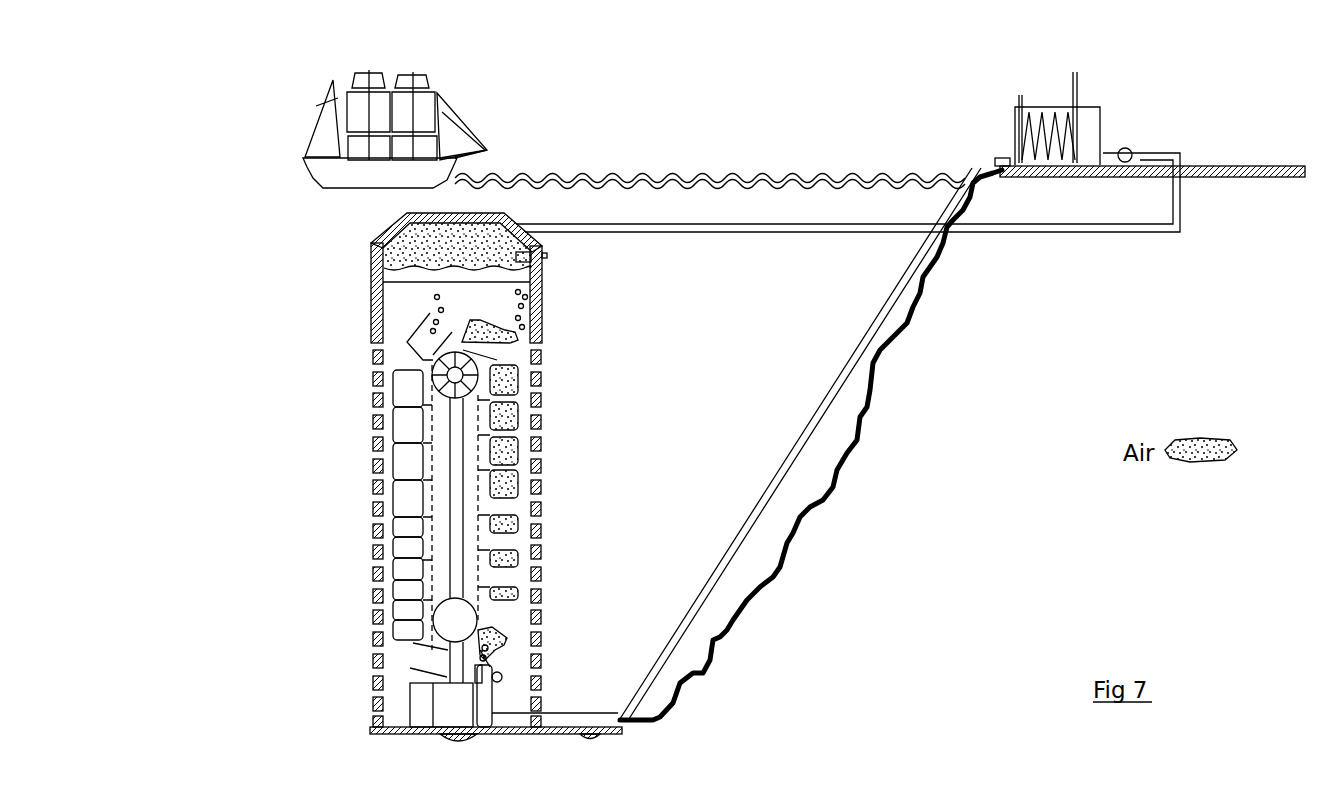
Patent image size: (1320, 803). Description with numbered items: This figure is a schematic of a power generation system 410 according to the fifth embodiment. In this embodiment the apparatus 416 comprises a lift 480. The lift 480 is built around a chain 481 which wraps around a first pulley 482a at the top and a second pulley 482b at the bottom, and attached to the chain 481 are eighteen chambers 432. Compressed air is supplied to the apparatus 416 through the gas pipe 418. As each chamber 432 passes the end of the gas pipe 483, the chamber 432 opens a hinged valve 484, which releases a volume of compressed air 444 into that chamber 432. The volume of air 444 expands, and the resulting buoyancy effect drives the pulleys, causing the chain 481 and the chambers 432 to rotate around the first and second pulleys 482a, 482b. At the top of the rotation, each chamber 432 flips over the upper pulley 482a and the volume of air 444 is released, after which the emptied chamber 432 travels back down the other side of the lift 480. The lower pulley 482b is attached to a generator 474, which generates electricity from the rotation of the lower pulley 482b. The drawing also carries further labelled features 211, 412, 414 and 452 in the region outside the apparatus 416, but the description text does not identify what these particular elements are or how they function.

The valve 211 is at (1125, 147).
The power generation system 410 is at (793, 268).
The conduit to shore 412 is at (1140, 170).
The onshore ground 414 is at (1088, 168).
The apparatus 416 is at (362, 210).
The gas pipe 418 is at (876, 323).
The chamber 432 is at (512, 655).
The volume of compressed air 444 is at (509, 640).
The onshore generator 452 is at (1048, 168).
The generator 474 is at (460, 609).
The lift 480 is at (522, 487).
The chain 481 is at (482, 505).
The first pulley 482a is at (468, 388).
The second pulley 482b is at (485, 623).
The end of the gas pipe 483 is at (493, 700).
The hinged valve 484 is at (502, 677).